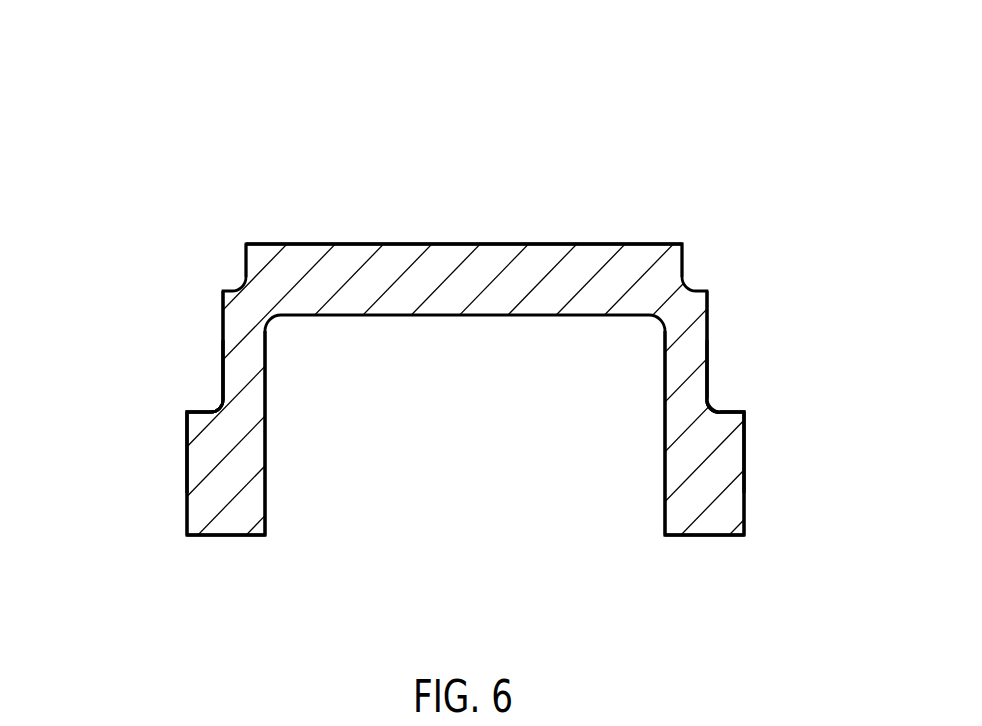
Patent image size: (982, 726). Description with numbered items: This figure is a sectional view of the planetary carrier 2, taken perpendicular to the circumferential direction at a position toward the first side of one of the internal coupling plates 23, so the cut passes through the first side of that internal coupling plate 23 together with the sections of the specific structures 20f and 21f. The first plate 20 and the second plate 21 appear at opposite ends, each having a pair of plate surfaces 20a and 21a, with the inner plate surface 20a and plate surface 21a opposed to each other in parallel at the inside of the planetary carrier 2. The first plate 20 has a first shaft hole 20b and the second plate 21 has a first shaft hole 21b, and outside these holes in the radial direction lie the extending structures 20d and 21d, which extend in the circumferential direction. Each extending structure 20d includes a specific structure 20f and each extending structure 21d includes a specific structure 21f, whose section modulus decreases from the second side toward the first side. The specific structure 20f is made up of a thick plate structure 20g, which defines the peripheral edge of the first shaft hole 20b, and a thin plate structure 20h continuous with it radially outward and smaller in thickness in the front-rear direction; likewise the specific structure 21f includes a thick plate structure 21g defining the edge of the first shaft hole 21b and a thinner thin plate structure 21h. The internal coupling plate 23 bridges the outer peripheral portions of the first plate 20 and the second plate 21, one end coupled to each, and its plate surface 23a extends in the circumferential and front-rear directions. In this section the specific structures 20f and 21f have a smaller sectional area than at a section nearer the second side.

The planetary carrier 2 is at (786, 154).
The first plate 20 is at (226, 549).
The plate surface 20a is at (265, 470).
The first shaft hole 20b is at (240, 536).
The extending structure 20d is at (118, 340).
The specific structure 20f is at (131, 416).
The thick plate structure 20g is at (180, 412).
The thin plate structure 20h is at (180, 315).
The second plate 21 is at (702, 549).
The plate surface 21a is at (665, 470).
The first shaft hole 21b is at (690, 536).
The extending structure 21d is at (812, 340).
The specific structure 21f is at (799, 416).
The thick plate structure 21g is at (747, 412).
The thin plate structure 21h is at (747, 315).
The internal coupling plate 23 is at (180, 244).
The plate surface 23a is at (467, 244).